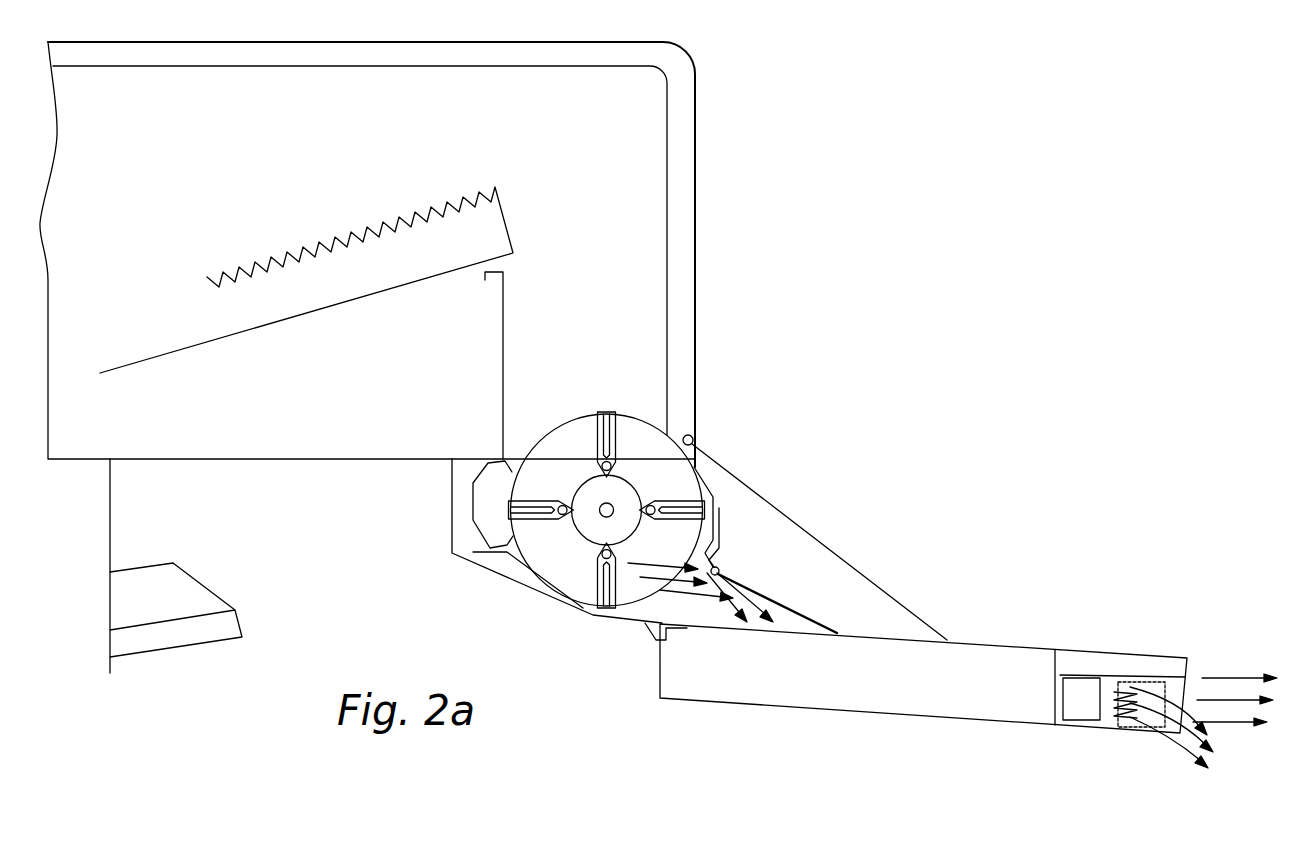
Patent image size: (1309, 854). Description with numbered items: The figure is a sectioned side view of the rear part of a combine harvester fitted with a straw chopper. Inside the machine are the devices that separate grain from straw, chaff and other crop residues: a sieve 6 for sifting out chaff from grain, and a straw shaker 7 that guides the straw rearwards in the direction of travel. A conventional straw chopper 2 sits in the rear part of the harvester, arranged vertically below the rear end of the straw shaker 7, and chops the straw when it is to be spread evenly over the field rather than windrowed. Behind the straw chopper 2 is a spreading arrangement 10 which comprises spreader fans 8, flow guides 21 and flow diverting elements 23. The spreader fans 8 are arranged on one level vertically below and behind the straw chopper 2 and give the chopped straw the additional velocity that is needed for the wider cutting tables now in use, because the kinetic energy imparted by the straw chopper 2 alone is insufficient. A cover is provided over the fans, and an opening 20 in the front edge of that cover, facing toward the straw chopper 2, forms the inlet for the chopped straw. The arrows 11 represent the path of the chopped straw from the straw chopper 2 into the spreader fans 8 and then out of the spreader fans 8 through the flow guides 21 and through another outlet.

The straw chopper 2 is at (663, 485).
The sieve 6 is at (200, 580).
The straw shaker 7 is at (366, 258).
The spreader fan 8 is at (977, 643).
The spreading arrangement 10 is at (899, 540).
The arrows 11 is at (720, 572).
The opening 20 is at (687, 627).
The flow guide 21 is at (1173, 695).
The flow diverting element 23 is at (1133, 728).